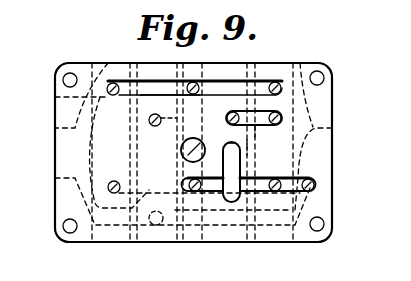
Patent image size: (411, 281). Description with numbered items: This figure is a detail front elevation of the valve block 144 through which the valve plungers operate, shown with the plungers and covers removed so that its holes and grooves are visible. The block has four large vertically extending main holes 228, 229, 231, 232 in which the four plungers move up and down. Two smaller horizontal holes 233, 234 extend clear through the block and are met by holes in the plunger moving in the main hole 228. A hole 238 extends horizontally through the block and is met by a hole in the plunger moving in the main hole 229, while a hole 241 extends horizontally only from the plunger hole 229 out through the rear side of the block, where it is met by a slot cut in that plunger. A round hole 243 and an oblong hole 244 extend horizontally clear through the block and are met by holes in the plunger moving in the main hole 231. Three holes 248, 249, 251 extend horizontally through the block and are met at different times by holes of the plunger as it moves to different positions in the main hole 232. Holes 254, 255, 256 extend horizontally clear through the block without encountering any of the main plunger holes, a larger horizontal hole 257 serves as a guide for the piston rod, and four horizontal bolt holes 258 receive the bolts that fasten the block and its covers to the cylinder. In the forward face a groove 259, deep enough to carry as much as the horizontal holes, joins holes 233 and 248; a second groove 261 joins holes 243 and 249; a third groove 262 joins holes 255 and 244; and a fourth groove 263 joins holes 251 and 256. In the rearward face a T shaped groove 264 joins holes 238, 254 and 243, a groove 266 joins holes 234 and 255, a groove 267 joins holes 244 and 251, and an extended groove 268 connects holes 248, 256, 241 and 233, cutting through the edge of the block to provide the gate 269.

The valve block 144 is at (322, 104).
The main hole 228 is at (97, 62).
The main hole 229 is at (148, 62).
The main hole 231 is at (232, 62).
The main hole 232 is at (296, 62).
The horizontal hole 233 is at (113, 95).
The horizontal hole 234 is at (114, 181).
The horizontal hole 238 is at (153, 126).
The horizontal hole 241 is at (152, 225).
The round hole 243 is at (241, 104).
The oblong hole 244 is at (232, 190).
The horizontal hole 248 is at (282, 106).
The horizontal hole 249 is at (256, 132).
The horizontal hole 251 is at (254, 178).
The horizontal hole 254 is at (177, 81).
The horizontal hole 255 is at (184, 180).
The horizontal hole 256 is at (314, 183).
The horizontal hole 257 is at (189, 180).
The bolt holes 258 is at (324, 77).
The groove 259 is at (160, 95).
The second groove 261 is at (240, 136).
The third groove 262 is at (216, 192).
The fourth groove 263 is at (291, 192).
The T shaped groove 264 is at (201, 134).
The groove 266 is at (132, 196).
The groove 267 is at (254, 147).
The extended groove 268 is at (333, 128).
The gate 269 is at (56, 152).